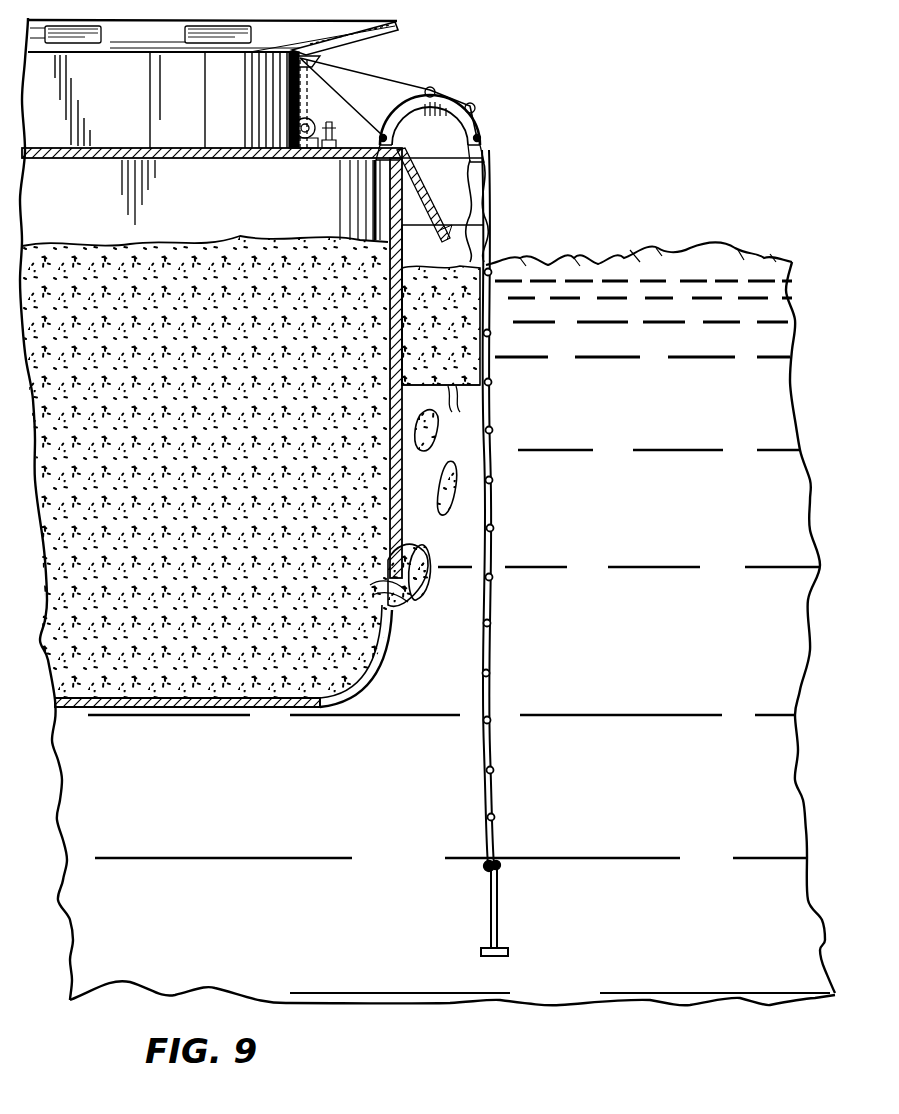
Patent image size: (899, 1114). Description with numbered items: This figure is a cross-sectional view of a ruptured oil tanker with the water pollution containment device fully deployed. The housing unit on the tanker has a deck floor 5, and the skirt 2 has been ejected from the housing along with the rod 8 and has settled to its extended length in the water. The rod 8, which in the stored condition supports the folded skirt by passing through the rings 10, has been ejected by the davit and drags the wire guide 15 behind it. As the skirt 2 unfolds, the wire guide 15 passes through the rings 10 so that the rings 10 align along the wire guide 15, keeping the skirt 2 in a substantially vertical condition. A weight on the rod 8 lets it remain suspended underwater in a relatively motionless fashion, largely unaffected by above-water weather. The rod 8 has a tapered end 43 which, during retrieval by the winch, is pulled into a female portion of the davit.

The deck floor 5 is at (246, 204).
The skirt assembly 2 is at (488, 452).
The rings 10 is at (494, 672).
The wire guide 15 is at (490, 762).
The tapered end 43 is at (498, 868).
The rod 8 is at (497, 935).